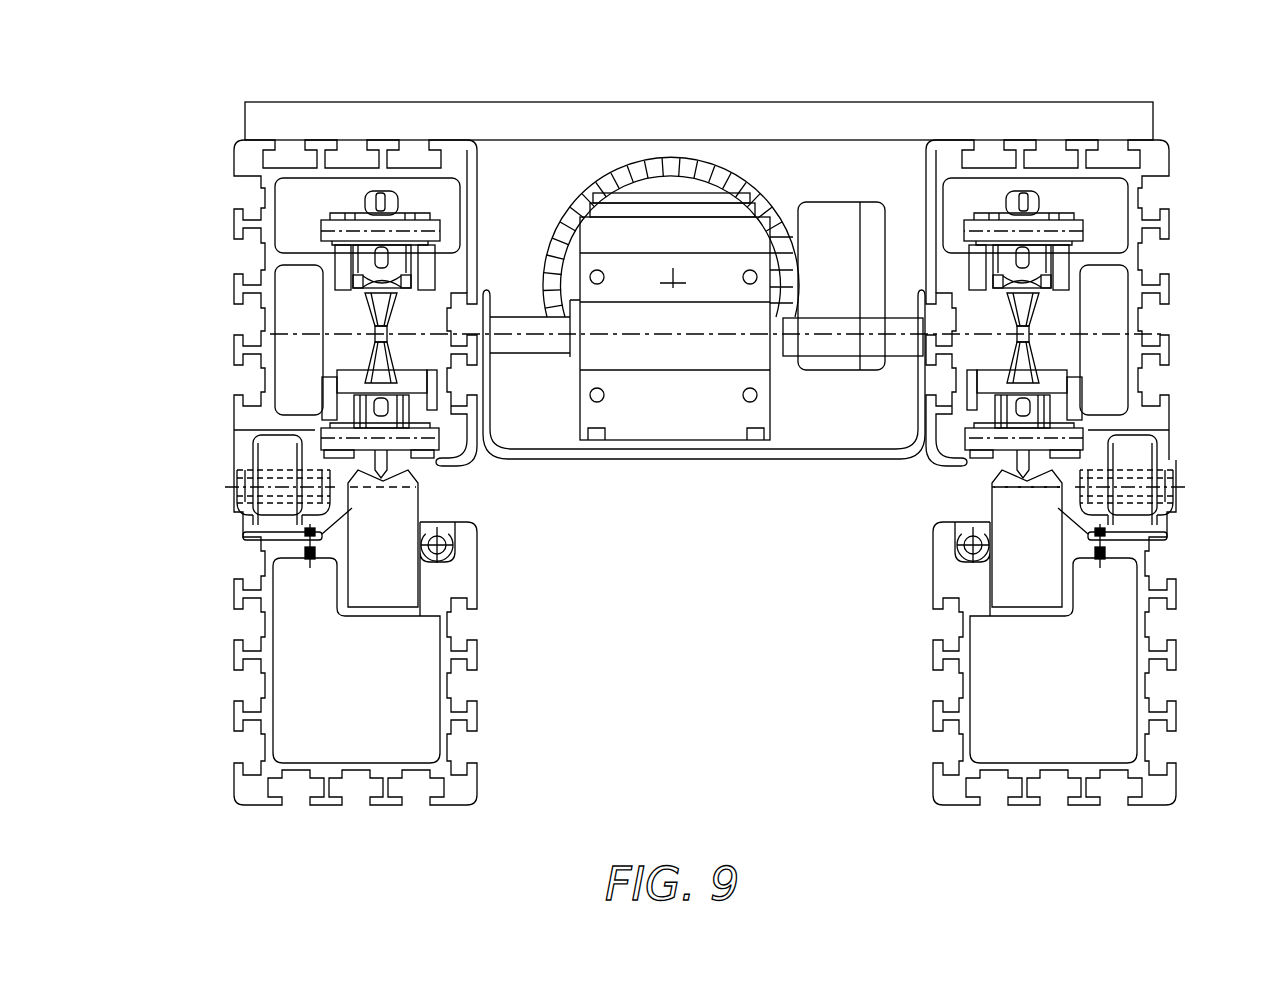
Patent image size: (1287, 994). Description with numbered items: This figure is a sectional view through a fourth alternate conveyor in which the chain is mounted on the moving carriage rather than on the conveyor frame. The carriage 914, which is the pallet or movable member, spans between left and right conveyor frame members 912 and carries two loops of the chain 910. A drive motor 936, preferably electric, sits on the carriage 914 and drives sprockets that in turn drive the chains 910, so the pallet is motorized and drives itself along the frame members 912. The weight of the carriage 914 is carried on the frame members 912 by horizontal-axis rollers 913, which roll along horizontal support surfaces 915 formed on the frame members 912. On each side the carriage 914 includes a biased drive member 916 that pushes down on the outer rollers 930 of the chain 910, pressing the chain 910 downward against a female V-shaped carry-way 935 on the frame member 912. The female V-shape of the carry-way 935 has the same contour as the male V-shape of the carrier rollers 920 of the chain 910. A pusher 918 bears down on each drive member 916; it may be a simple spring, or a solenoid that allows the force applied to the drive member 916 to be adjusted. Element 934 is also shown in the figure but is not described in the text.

The chain 910 is at (367, 400).
The conveyor frame member 912 is at (467, 560).
The horizontal-axis roller 913 is at (255, 518).
The carriage 914 is at (582, 116).
The horizontal support surface 915 is at (262, 536).
The biased drive member 916 is at (340, 390).
The pusher 918 is at (1047, 327).
The carrier roller 920 is at (394, 192).
The outer roller 930 is at (1077, 420).
The spacer 934 is at (985, 495).
The female V-shaped carry-way 935 is at (405, 508).
The drive motor 936 is at (680, 227).